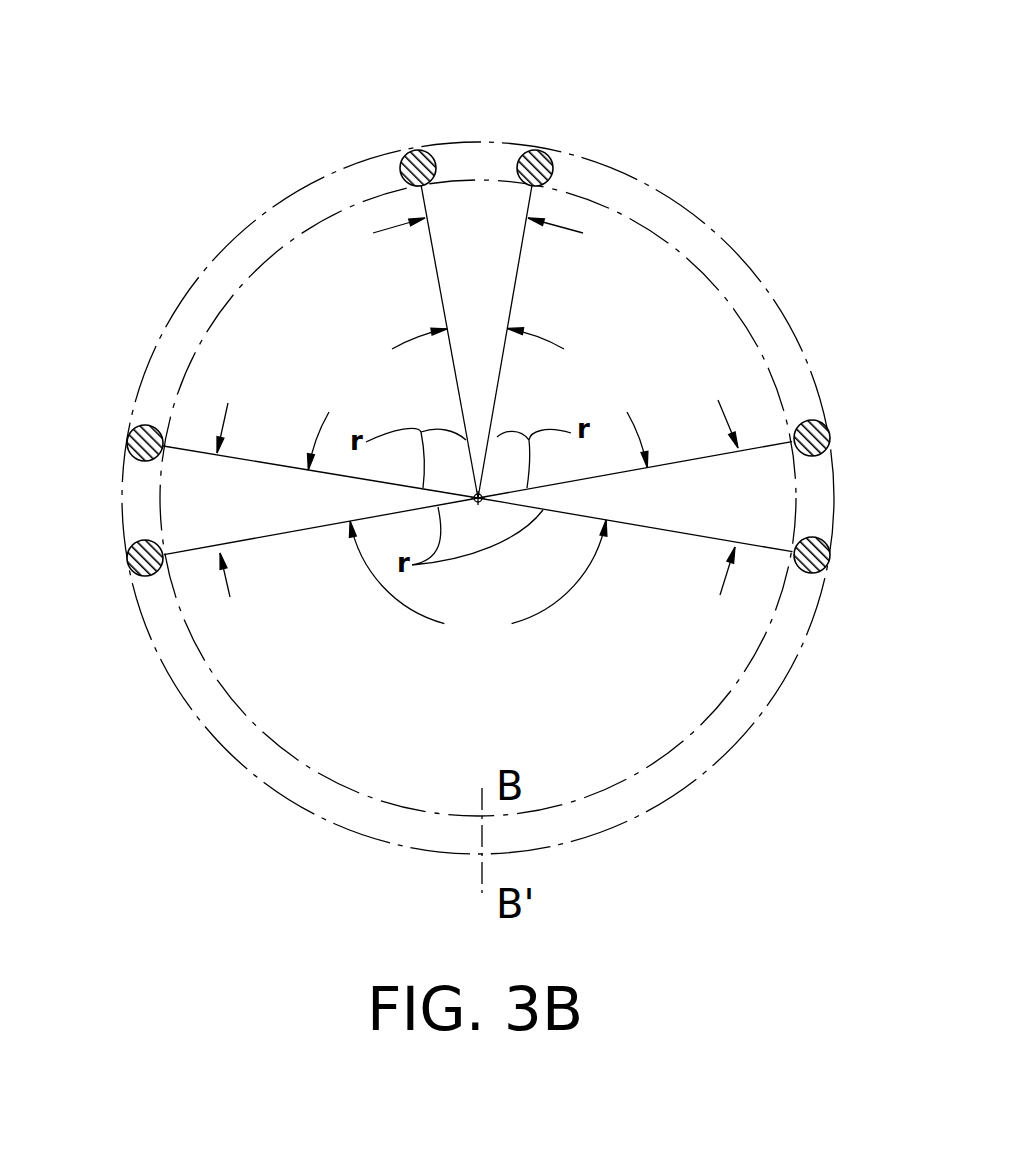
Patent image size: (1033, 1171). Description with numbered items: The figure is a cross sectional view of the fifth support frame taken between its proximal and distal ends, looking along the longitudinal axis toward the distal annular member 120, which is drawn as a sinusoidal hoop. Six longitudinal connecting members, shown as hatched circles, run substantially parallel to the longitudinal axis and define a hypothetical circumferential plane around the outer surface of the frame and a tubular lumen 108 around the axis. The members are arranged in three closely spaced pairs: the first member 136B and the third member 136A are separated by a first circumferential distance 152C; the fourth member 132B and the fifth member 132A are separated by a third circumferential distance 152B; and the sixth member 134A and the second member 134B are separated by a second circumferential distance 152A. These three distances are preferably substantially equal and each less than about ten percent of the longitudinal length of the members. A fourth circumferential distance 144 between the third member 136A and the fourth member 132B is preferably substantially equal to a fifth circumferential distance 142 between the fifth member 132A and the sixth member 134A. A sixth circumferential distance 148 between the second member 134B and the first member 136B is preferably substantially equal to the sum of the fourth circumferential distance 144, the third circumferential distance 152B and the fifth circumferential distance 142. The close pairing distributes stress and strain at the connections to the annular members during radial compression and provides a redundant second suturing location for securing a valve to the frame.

The tubular lumen 108 is at (360, 692).
The distal annular member 120 is at (718, 236).
The fifth member 132A is at (549, 157).
The fourth member 132B is at (404, 156).
The sixth member 134A is at (827, 430).
The second member 134B is at (826, 563).
The third member 136A is at (130, 435).
The first member 136B is at (130, 566).
The fifth circumferential distance 142 is at (577, 398).
The fourth circumferential distance 144 is at (378, 399).
The sixth circumferential distance 148 is at (478, 583).
The second circumferential distance 152A is at (738, 497).
The third circumferential distance 152B is at (478, 217).
The first circumferential distance 152C is at (210, 500).